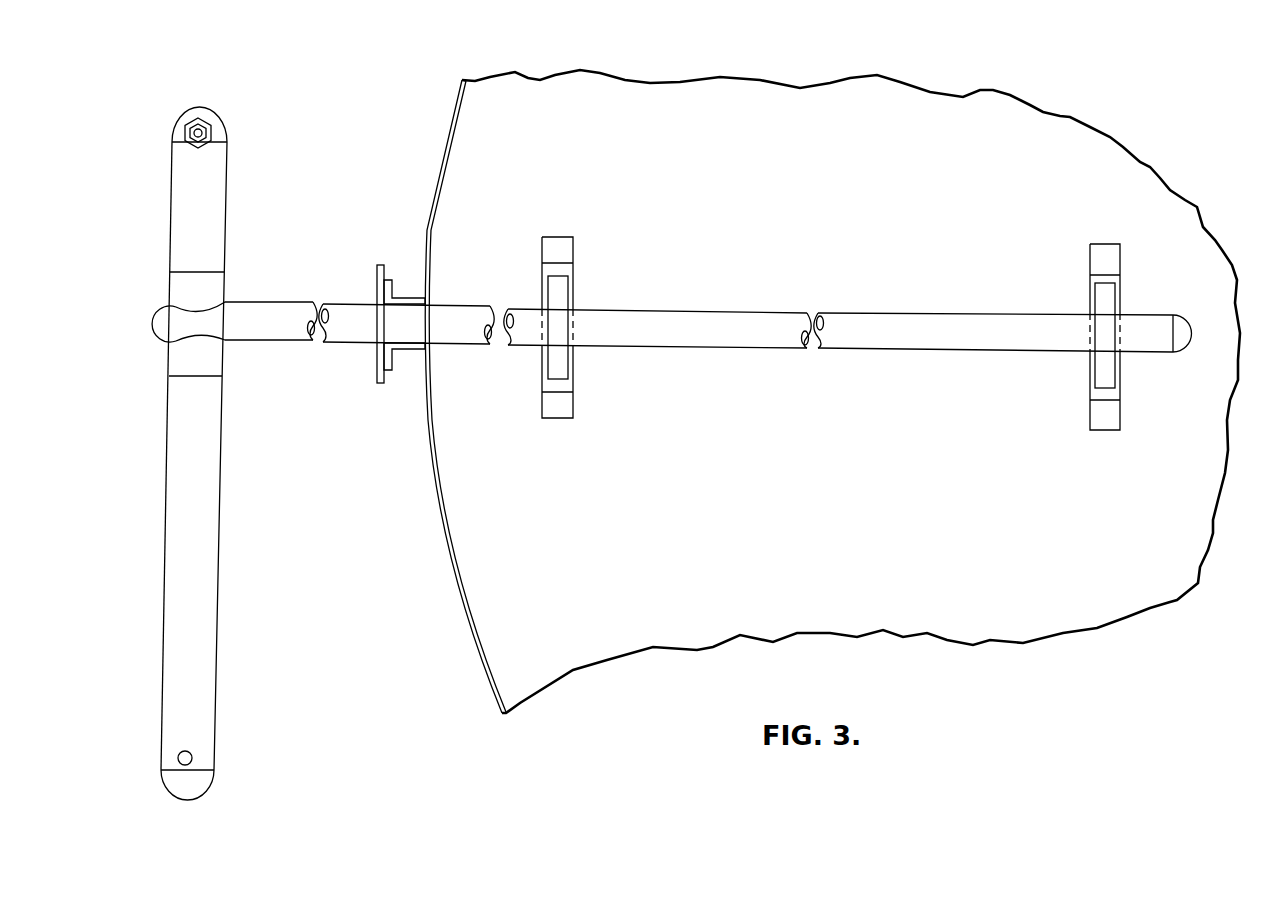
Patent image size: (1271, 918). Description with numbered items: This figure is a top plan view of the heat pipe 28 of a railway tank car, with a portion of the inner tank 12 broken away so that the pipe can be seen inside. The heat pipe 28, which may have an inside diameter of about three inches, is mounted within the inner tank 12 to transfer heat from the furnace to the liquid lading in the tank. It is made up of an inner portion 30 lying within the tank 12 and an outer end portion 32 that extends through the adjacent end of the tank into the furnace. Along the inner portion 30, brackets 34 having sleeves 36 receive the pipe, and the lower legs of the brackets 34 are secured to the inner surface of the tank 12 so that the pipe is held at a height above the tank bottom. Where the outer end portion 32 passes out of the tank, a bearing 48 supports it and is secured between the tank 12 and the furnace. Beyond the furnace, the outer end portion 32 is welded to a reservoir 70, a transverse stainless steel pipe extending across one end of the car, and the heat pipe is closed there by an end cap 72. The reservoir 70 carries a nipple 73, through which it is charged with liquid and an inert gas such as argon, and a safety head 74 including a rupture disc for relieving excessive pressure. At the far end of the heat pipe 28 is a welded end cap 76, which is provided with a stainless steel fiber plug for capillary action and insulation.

The inner tank 12 is at (423, 412).
The heat pipe 28 is at (932, 308).
The inner portion 30 is at (695, 311).
The outer end portion 32 is at (290, 344).
The brackets 34 is at (577, 250).
The sleeves 36 is at (565, 289).
The bearing 48 is at (410, 297).
The reservoir 70 is at (220, 533).
The end cap 72 is at (150, 312).
The nipple 73 is at (192, 759).
The safety head 74 is at (214, 131).
The end cap 76 is at (1184, 331).